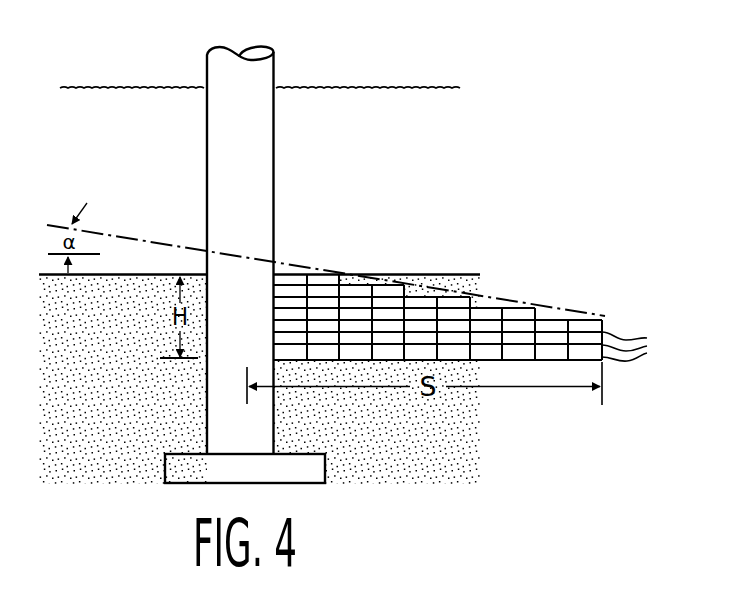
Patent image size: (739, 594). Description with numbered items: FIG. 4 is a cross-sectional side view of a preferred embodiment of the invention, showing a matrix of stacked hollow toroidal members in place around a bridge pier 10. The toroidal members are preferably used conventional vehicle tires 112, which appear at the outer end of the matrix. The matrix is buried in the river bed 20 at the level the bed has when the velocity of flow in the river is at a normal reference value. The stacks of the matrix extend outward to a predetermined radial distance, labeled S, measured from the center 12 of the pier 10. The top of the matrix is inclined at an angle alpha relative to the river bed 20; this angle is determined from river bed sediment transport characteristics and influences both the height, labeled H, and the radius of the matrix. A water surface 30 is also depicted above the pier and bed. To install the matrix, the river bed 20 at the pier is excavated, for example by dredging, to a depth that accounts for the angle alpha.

The bridge pier 10 is at (274, 72).
The center of the pier 12 is at (245, 393).
The river bed 20 is at (414, 273).
The water surface 30 is at (405, 87).
The vehicle tires 112 is at (644, 343).